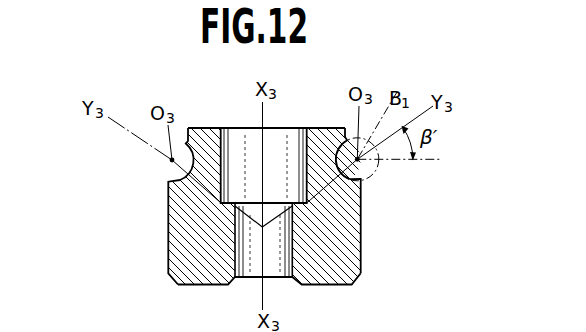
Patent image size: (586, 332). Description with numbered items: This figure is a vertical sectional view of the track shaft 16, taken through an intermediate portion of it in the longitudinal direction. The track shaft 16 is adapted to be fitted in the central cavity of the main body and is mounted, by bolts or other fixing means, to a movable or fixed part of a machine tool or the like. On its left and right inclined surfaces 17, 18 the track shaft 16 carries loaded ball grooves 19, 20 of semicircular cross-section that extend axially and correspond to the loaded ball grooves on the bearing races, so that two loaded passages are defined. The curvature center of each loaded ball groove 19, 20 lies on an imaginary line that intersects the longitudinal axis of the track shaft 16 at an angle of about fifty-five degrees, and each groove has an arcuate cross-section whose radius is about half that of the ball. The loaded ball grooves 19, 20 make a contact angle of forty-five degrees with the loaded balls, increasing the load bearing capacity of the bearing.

The track shaft 16 is at (292, 118).
The left inclined surface 17 is at (187, 128).
The right inclined surface 18 is at (343, 133).
The loaded ball groove 19 is at (176, 181).
The loaded ball groove 20 is at (353, 178).